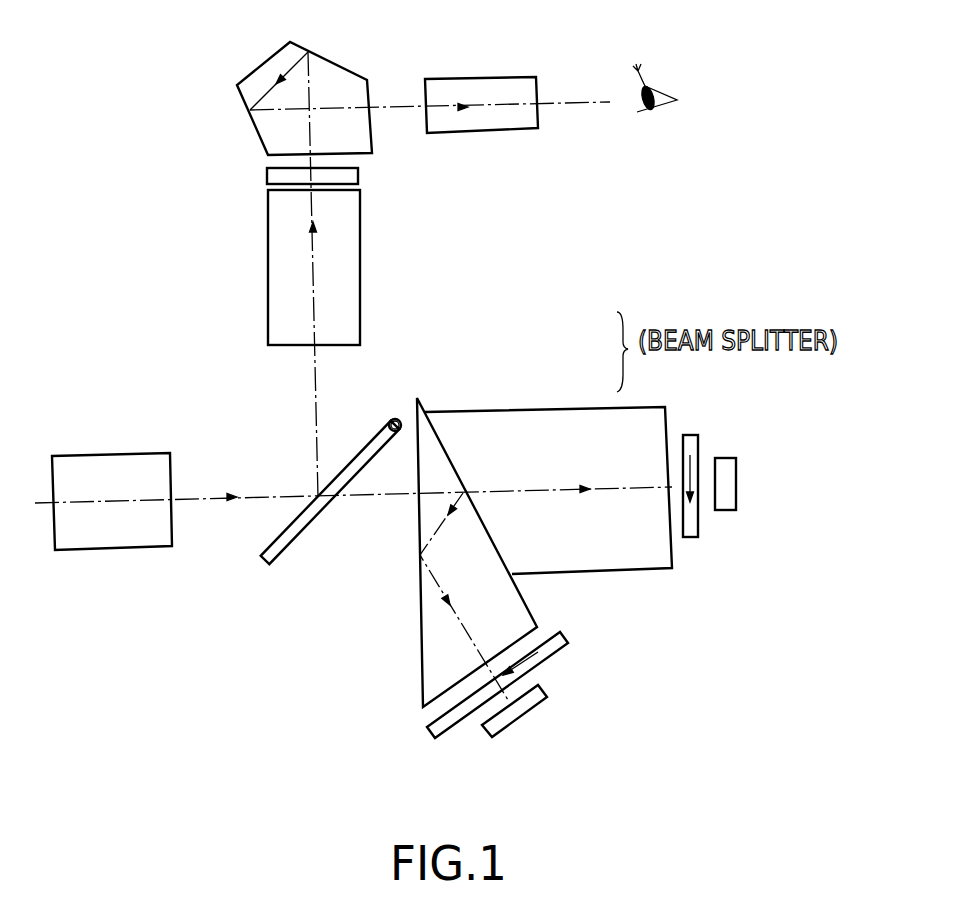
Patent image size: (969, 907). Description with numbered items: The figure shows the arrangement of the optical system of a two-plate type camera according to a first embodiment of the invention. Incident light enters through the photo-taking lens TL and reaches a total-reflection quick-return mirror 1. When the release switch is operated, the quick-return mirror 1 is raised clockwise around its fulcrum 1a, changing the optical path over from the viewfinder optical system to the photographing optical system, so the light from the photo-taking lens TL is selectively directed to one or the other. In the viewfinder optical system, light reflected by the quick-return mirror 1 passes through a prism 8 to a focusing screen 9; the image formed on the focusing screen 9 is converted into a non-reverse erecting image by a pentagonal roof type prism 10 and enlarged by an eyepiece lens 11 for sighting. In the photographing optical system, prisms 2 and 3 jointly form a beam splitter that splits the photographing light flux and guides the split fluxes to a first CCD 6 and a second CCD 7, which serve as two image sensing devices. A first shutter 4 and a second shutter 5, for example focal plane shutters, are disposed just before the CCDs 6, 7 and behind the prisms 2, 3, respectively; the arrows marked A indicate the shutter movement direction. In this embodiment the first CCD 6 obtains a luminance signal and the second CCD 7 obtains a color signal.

The photo-taking lens TL is at (117, 550).
The quick-return mirror 1 is at (291, 553).
The fulcrum 1a is at (393, 421).
The prism 2 is at (437, 452).
The prism 3 is at (521, 412).
The first shutter 4 is at (690, 435).
The second shutter 5 is at (568, 640).
The first solid-state image sensor 6 is at (725, 458).
The second solid-state image sensor 7 is at (530, 713).
The prism 8 is at (268, 262).
The focusing screen 9 is at (267, 176).
The pentagonal roof type prism 10 is at (345, 67).
The eyepiece lens 11 is at (496, 78).
The shutter moving direction A is at (693, 465).